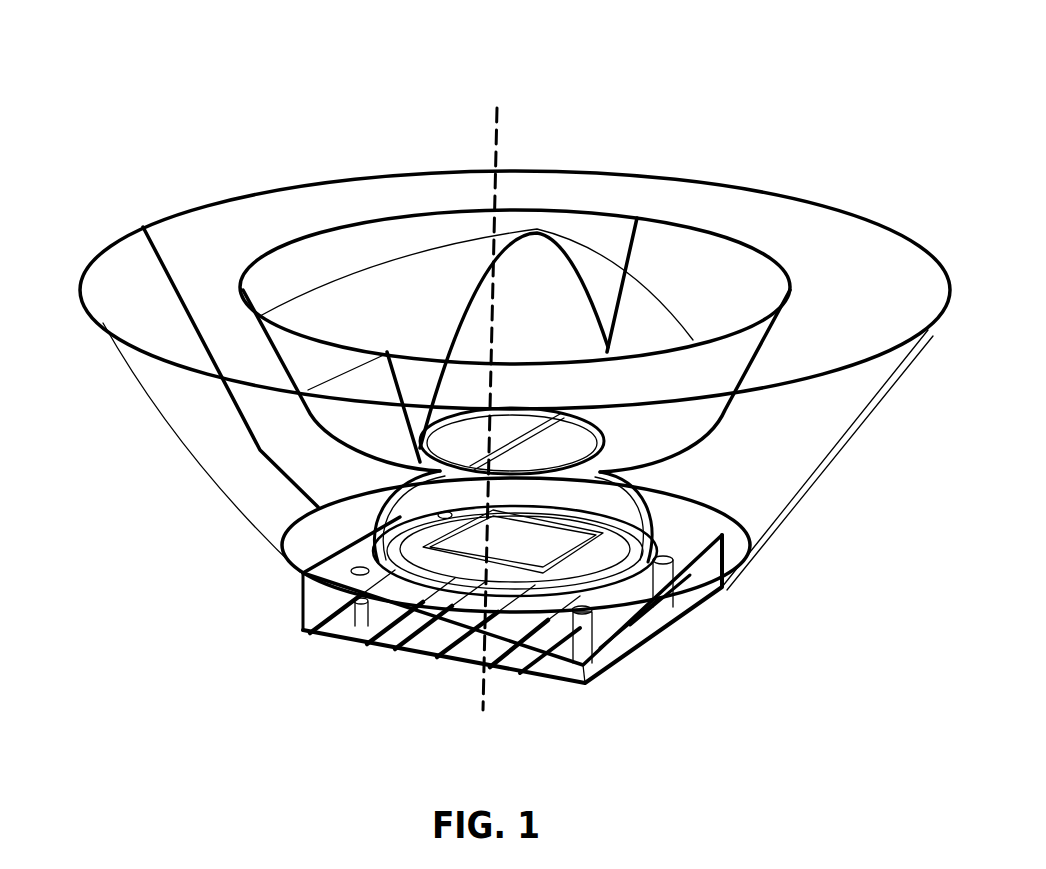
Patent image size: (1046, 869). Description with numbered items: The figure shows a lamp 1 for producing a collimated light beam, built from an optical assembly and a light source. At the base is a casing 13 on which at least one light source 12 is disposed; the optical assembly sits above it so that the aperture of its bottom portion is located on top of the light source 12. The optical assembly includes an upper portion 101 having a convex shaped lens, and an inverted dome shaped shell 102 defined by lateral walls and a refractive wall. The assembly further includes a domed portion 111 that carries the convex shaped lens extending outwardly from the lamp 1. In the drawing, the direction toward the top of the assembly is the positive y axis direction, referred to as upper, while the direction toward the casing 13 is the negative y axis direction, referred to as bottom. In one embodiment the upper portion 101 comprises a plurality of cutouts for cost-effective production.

The lamp 1 is at (212, 138).
The upper portion 101 is at (715, 210).
The inverted dome shaped shell 102 is at (810, 407).
The domed portion 111 is at (443, 273).
The light source 12 is at (540, 550).
The casing 13 is at (298, 587).